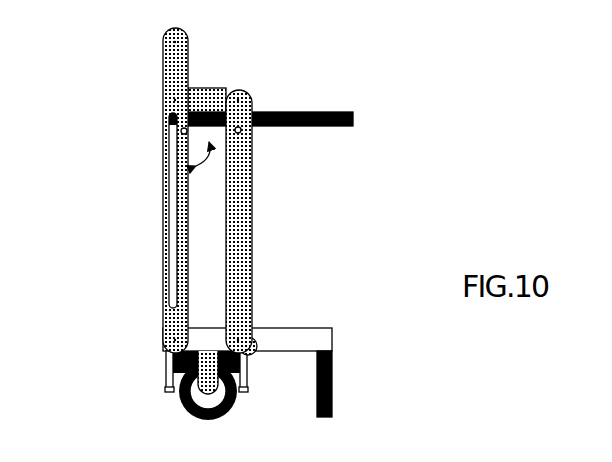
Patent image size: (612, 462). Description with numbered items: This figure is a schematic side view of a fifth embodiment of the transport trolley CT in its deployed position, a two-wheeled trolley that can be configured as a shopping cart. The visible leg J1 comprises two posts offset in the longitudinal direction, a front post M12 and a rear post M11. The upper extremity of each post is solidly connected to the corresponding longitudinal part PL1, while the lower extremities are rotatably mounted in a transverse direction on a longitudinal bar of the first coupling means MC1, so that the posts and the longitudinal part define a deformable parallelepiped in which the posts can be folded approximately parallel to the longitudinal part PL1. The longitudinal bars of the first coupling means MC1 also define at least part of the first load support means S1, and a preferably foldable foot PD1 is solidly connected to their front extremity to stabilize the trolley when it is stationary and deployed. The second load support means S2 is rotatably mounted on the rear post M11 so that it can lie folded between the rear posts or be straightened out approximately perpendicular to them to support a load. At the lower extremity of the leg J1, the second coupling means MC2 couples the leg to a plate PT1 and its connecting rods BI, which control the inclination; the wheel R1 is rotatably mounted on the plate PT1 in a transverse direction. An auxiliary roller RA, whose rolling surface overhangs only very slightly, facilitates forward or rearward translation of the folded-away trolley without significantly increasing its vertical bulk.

The transport trolley CT is at (114, 190).
The longitudinal part PL1 is at (205, 87).
The second load support means S2 is at (287, 112).
The leg J1 is at (113, 210).
The post M12 is at (163, 130).
The post M11 is at (247, 190).
The first coupling means MC1 is at (268, 312).
The first load support means S1 is at (285, 330).
The second coupling means MC2 is at (198, 342).
The connecting rods BI is at (167, 372).
The plate PT1 is at (205, 415).
The wheel R1 is at (167, 399).
The auxiliary roller RA is at (251, 356).
The foot PD1 is at (326, 390).